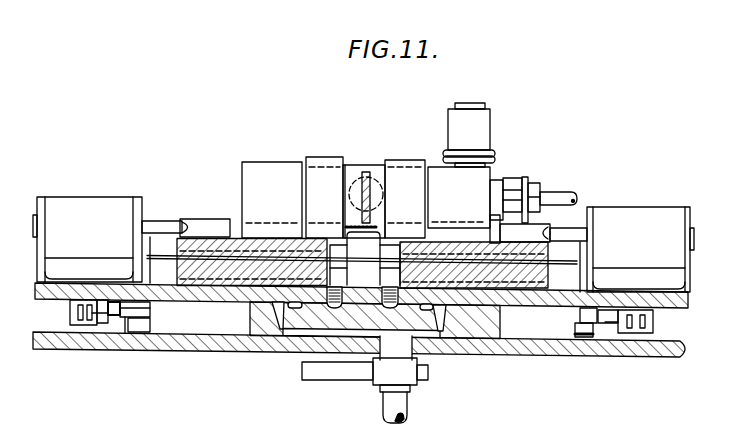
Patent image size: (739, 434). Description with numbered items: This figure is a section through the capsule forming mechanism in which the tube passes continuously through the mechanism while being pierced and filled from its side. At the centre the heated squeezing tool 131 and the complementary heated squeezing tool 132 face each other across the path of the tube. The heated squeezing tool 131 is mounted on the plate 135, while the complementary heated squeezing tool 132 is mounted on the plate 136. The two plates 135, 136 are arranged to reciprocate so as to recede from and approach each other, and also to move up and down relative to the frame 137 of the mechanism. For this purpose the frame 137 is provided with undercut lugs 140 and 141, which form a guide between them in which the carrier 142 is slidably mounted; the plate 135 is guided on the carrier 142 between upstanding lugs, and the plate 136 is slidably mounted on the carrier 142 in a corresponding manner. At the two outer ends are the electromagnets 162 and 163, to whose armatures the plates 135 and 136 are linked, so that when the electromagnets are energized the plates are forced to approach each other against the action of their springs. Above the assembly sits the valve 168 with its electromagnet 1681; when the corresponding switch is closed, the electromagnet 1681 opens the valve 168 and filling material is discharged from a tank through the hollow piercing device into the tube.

The heated squeezing tool 131 is at (378, 172).
The complementary heated squeezing tool 132 is at (352, 170).
The plate 135 is at (552, 238).
The plate 136 is at (203, 237).
The frame 137 is at (628, 343).
The undercut lug 140 is at (448, 318).
The undercut lug 141 is at (278, 310).
The carrier 142 is at (671, 303).
The electromagnet 162 is at (647, 218).
The electromagnet 163 is at (88, 208).
The valve 168 is at (497, 180).
The electromagnet 1681 is at (480, 128).